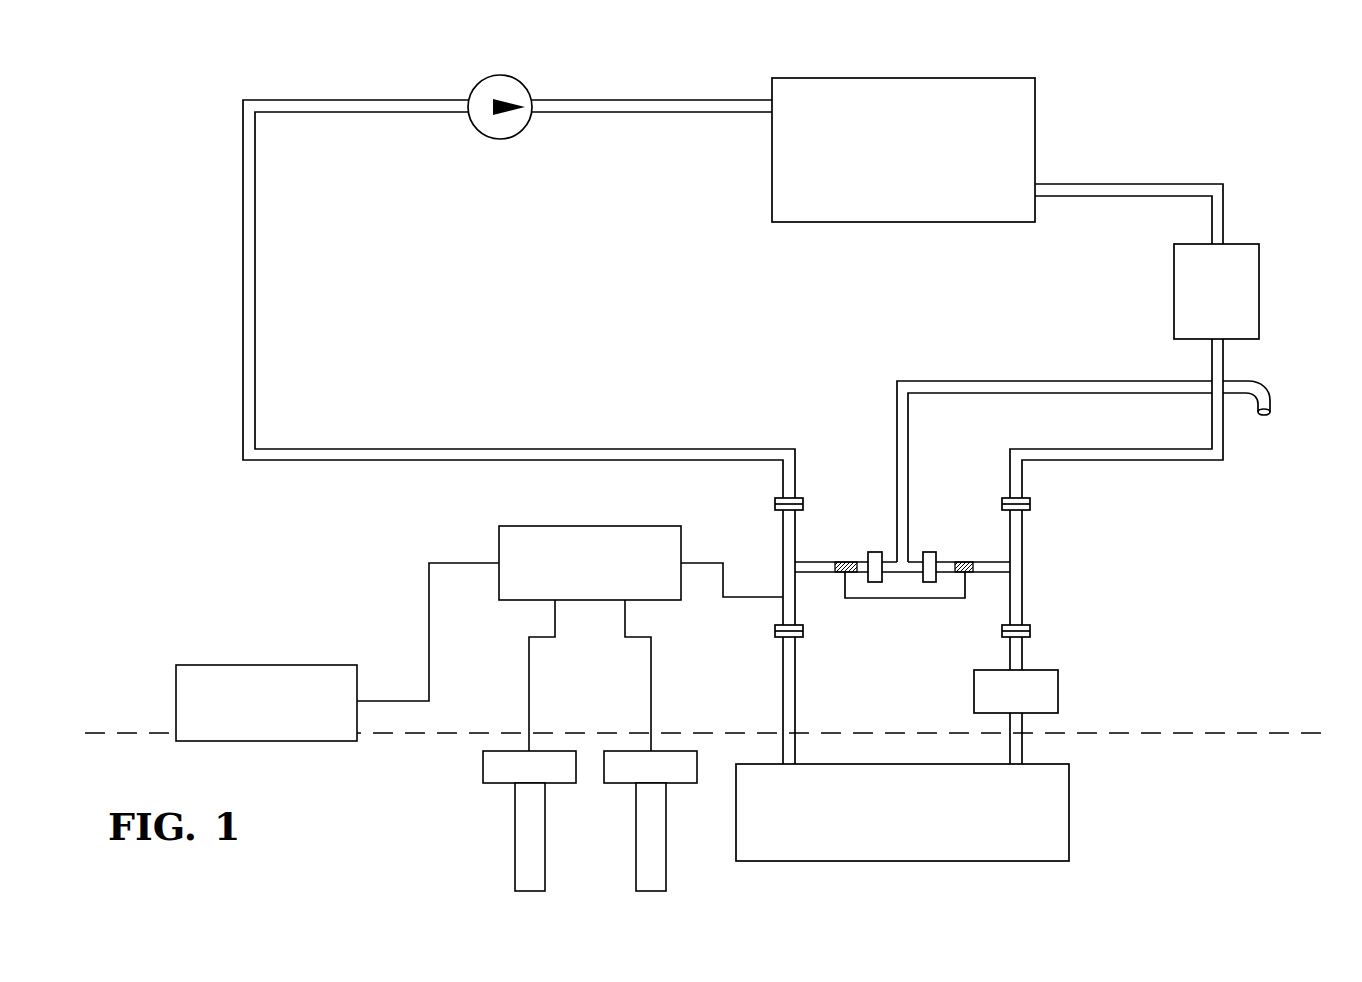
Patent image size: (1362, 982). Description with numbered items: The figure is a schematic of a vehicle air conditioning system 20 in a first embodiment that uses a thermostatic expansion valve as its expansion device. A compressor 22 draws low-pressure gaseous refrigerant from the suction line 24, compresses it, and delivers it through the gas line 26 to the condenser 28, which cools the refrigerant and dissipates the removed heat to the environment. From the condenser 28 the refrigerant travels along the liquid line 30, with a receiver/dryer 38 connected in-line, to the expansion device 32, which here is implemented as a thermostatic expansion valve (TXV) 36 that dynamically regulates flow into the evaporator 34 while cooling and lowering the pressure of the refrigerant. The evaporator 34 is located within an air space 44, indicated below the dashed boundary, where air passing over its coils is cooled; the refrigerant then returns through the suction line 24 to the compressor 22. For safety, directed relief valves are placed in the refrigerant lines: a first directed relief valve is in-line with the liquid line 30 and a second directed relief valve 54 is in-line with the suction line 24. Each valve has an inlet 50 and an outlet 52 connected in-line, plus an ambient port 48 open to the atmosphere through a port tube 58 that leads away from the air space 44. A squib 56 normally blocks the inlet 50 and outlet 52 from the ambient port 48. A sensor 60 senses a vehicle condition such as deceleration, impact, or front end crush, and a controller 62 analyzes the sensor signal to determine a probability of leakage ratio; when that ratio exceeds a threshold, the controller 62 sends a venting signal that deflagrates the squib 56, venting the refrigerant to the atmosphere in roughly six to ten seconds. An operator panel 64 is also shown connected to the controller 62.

The air conditioning system 20 is at (1250, 84).
The compressor 22 is at (478, 83).
The suction line 24 is at (300, 100).
The gas line 26 is at (660, 100).
The condenser 28 is at (1035, 97).
The liquid line 30 is at (1175, 183).
The expansion device 32 is at (1067, 690).
The evaporator 34 is at (1069, 843).
The thermostatic expansion valve 36 is at (1058, 700).
The receiver/dryer 38 is at (1250, 244).
The air space 44 is at (1182, 796).
The ambient port 48 is at (875, 552).
The inlet 50 is at (775, 632).
The outlet 52 is at (775, 503).
The second directed relief valve 54 is at (770, 560).
The squib 56 is at (846, 562).
The port tube 58 is at (1258, 390).
The sensor 60 is at (636, 827).
The controller 62 is at (516, 526).
The operator panel 64 is at (188, 665).